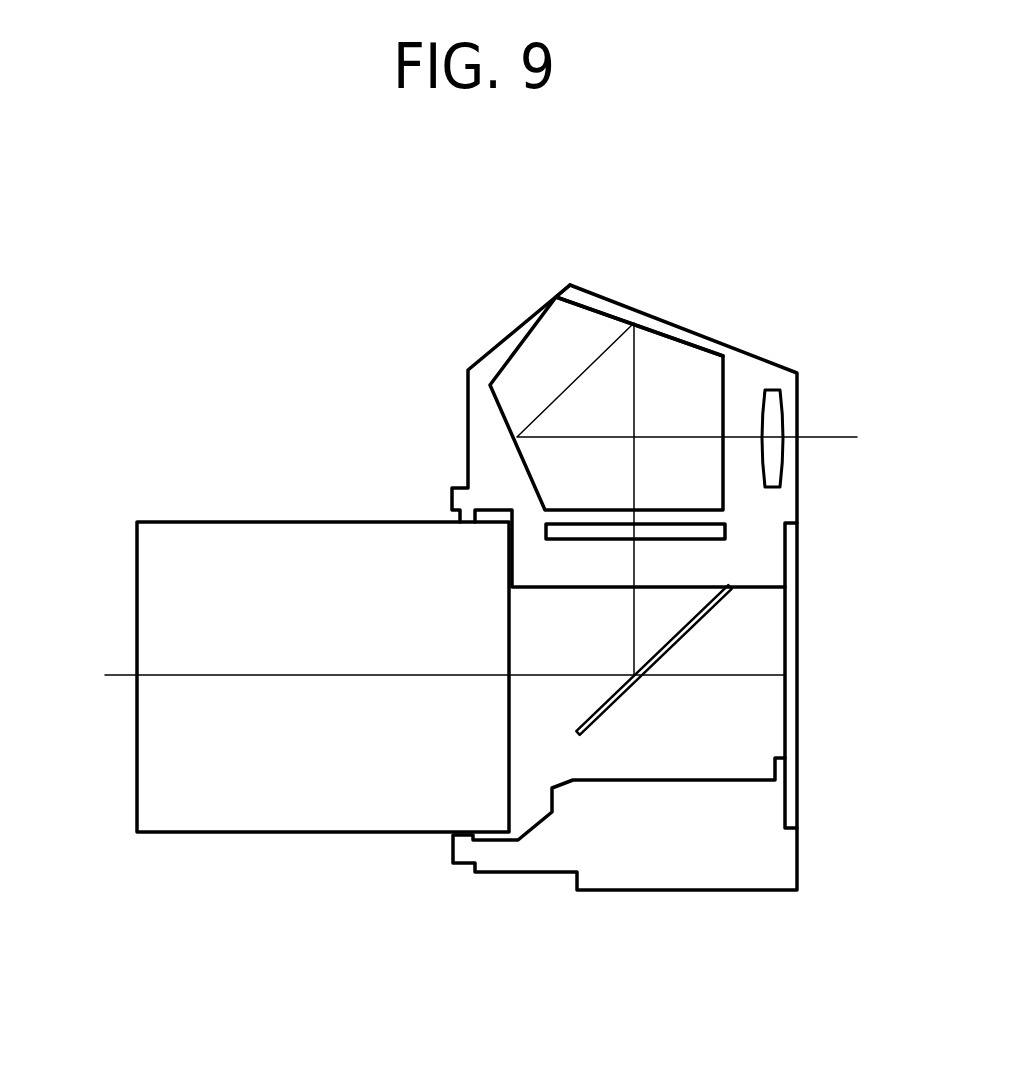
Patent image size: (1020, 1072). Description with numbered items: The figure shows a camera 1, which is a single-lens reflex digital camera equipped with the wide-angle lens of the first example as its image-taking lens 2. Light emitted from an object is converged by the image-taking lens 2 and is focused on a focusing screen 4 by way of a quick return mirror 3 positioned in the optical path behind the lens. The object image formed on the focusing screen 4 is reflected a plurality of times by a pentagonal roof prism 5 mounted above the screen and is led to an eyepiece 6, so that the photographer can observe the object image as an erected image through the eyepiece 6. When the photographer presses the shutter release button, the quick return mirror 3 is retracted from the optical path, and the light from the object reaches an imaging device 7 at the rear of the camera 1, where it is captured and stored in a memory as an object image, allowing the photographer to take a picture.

The camera 1 is at (148, 298).
The image-taking lens 2 is at (188, 547).
The quick return mirror 3 is at (610, 707).
The focusing screen 4 is at (712, 533).
The pentagonal roof prism 5 is at (583, 323).
The eyepiece 6 is at (770, 413).
The imaging device 7 is at (792, 705).